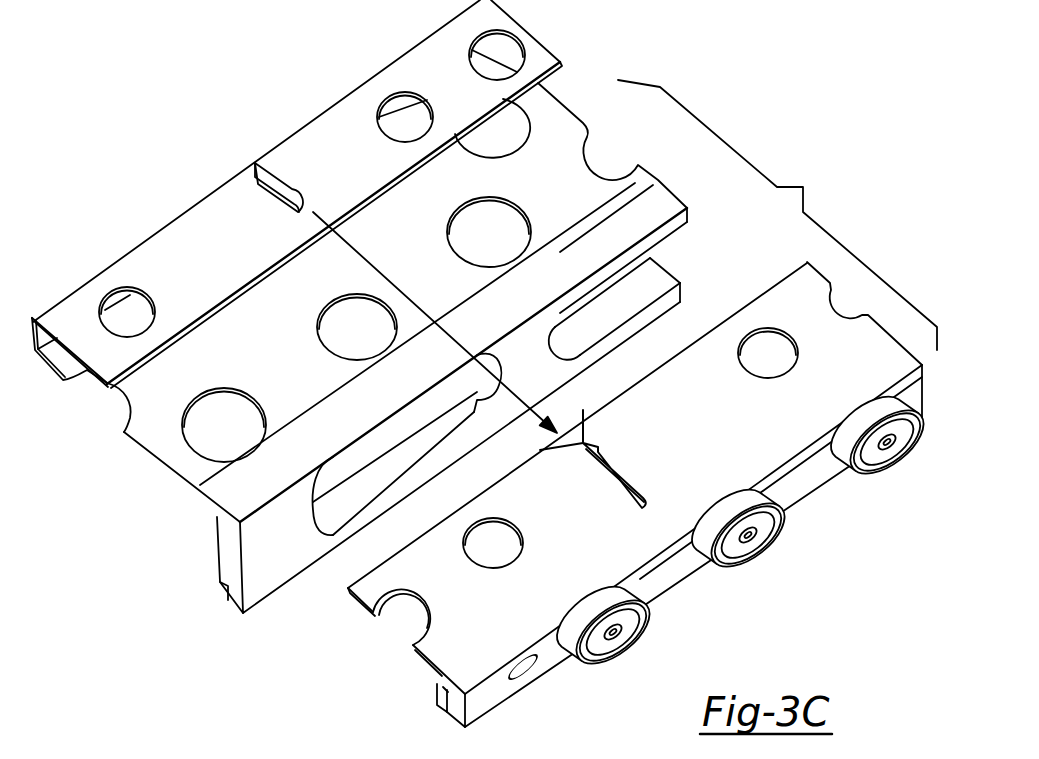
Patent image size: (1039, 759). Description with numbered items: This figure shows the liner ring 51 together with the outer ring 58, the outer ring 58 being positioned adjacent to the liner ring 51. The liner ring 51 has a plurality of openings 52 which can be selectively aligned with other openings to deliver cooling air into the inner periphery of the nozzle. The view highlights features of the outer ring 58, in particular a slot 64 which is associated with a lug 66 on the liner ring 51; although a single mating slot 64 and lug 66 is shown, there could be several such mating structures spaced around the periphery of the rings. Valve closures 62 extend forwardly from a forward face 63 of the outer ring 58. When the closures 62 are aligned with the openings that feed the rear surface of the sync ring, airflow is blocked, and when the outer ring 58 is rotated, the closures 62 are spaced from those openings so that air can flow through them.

The liner ring 51 is at (297, 243).
The openings 52 is at (397, 348).
The outer ring 58 is at (638, 494).
The valve closures 62 is at (612, 652).
The forward face 63 is at (802, 488).
The slot 64 is at (600, 465).
The lug 66 is at (268, 163).